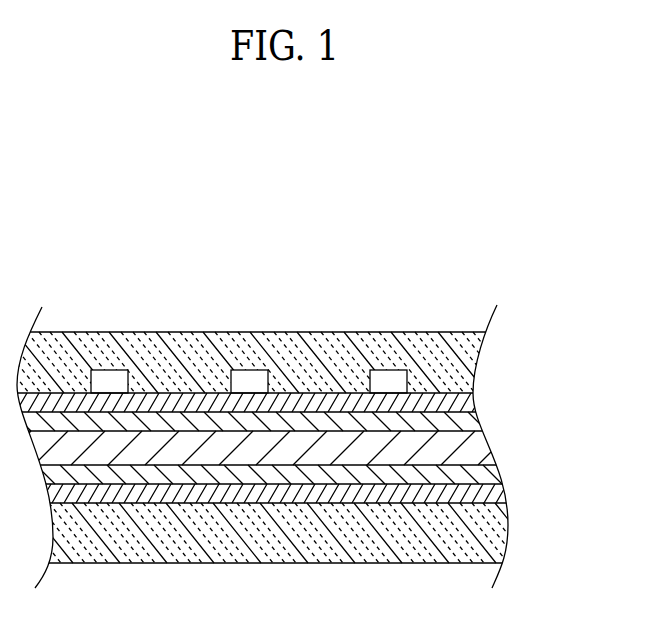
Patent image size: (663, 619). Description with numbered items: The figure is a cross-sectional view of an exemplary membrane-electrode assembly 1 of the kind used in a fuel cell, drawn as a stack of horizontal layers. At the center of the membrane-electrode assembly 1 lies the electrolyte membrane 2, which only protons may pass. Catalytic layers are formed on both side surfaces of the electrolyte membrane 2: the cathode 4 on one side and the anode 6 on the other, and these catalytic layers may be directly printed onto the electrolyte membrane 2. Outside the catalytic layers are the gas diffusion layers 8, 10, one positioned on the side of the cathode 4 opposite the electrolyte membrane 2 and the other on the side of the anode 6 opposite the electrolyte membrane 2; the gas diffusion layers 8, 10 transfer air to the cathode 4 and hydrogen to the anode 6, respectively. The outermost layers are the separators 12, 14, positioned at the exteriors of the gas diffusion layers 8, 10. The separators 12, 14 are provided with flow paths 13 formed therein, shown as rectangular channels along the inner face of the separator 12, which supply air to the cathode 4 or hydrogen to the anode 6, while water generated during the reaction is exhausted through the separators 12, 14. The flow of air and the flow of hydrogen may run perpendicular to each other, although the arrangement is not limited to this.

The membrane-electrode assembly 1 is at (533, 312).
The electrolyte membrane 2 is at (462, 450).
The cathode 4 is at (460, 423).
The anode 6 is at (473, 477).
The gas diffusion layer 8 is at (463, 402).
The gas diffusion layer 10 is at (483, 497).
The separator 12 is at (458, 347).
The flow paths 13 is at (247, 375).
The separator 14 is at (487, 540).